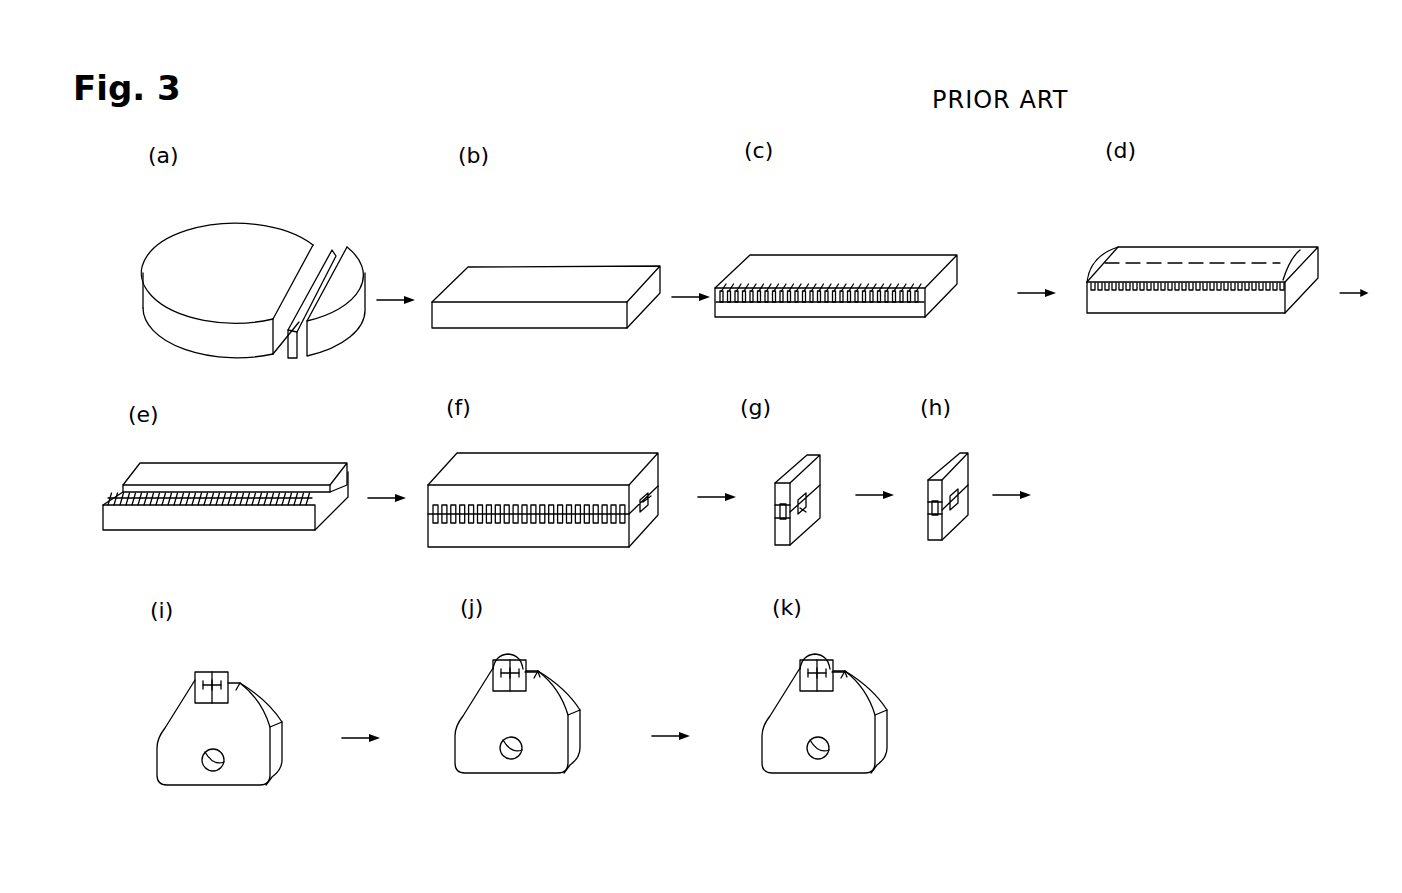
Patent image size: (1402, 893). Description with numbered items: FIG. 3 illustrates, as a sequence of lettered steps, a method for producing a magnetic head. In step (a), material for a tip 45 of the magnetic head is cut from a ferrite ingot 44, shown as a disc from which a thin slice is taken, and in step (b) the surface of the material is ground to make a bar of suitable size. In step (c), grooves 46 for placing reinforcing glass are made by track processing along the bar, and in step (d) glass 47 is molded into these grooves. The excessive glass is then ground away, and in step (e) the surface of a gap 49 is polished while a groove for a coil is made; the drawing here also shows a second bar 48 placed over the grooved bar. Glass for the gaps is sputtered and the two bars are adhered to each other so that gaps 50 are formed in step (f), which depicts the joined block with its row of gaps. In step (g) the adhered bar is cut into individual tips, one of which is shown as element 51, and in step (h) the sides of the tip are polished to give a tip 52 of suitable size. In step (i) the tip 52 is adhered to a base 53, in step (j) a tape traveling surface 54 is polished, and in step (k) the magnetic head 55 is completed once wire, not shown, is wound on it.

The ferrite ingot 44 is at (167, 242).
The tip material 45 is at (333, 252).
The grooves 46 is at (730, 283).
The glass 47 is at (1103, 257).
The mating bar 48 is at (117, 480).
The gap 49 is at (110, 497).
The gaps 50 is at (636, 510).
The sliced core chip 51 is at (820, 466).
The tip 52 is at (970, 466).
The base 53 is at (265, 708).
The tape traveling surface 54 is at (520, 662).
The magnetic head 55 is at (832, 662).